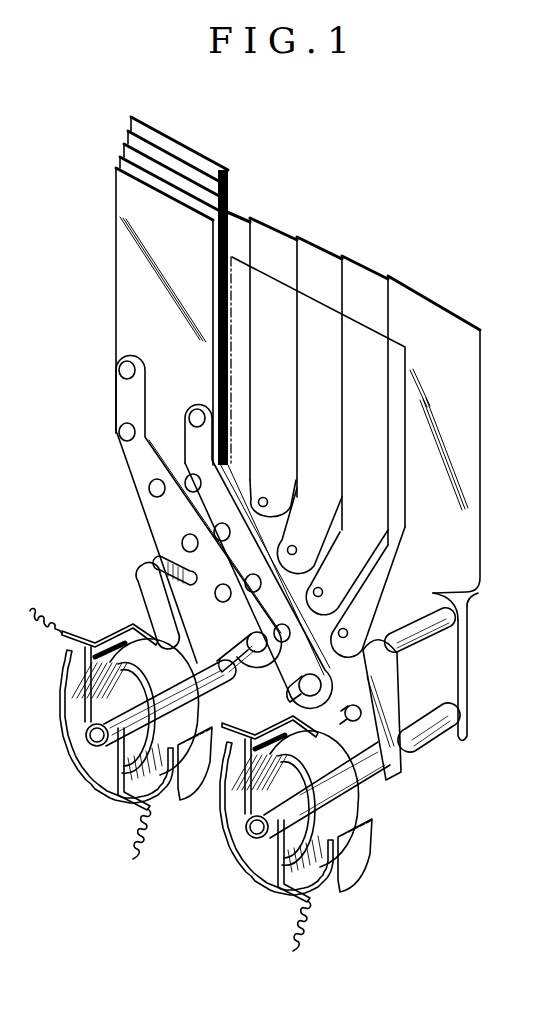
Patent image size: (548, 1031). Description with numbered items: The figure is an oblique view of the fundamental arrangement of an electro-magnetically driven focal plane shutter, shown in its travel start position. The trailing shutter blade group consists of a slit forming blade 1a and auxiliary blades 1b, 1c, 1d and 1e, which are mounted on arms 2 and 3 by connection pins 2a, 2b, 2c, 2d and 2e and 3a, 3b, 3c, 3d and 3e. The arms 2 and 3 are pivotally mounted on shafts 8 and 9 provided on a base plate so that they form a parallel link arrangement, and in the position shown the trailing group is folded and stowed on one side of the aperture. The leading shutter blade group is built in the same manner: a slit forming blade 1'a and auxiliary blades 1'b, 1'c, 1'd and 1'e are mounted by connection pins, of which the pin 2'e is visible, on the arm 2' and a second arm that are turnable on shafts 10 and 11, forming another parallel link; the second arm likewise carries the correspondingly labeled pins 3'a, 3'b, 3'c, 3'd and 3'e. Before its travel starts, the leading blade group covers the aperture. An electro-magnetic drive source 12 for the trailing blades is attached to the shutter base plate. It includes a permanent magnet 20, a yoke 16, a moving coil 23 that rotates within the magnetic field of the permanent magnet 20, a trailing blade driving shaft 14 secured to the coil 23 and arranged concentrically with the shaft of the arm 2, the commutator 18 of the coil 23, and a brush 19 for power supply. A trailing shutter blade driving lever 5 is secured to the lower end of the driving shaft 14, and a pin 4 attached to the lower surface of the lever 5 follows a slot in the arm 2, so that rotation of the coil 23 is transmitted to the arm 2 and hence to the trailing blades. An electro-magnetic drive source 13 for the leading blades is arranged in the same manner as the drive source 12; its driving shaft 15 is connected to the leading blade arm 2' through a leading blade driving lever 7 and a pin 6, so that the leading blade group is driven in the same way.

The slit forming blade 1a is at (116, 198).
The auxiliary blade 1b is at (120, 157).
The auxiliary blade 1c is at (124, 144).
The auxiliary blade 1d is at (128, 131).
The auxiliary blade 1e is at (157, 131).
The slit forming blade 1'a is at (316, 349).
The auxiliary blade 1'b is at (307, 377).
The auxiliary blade 1'c is at (347, 408).
The auxiliary blade 1'd is at (405, 438).
The auxiliary blade 1'e is at (450, 425).
The arm 2 is at (180, 512).
The connection pin 2a is at (118, 368).
The connection pin 2b is at (118, 432).
The connection pin 2c is at (148, 488).
The connection pin 2d is at (181, 543).
The connection pin 2e is at (213, 593).
The arm 3 is at (246, 552).
The connection pin 3a is at (193, 410).
The connection pin 3b is at (184, 479).
The connection pin 3c is at (213, 529).
The connection pin 3d is at (244, 581).
The connection pin 3e is at (246, 643).
The plate tongue 3'a is at (300, 570).
The plate tongue hole 3'b is at (270, 487).
The plate tongue hole 3'c is at (303, 530).
The plate tongue hole 3'd is at (332, 574).
The plate tongue hole 3'e is at (368, 619).
The arm 2' is at (480, 667).
The connection pin 2'e is at (430, 595).
The pin 4 is at (138, 572).
The trailing shutter blade driving lever 5 is at (156, 562).
The pin 6 is at (427, 642).
The leading blade driving lever 7 is at (388, 680).
The shaft 8 is at (260, 654).
The shaft 9 is at (300, 692).
The shaft 10 is at (426, 742).
The shaft 11 is at (349, 720).
The electro-magnetic drive source 12 is at (62, 748).
The electro-magnetic drive source 13 is at (222, 838).
The trailing blade driving shaft 14 is at (85, 680).
The driving shaft 15 is at (370, 774).
The yoke 16 is at (62, 733).
The commutator 18 is at (92, 746).
The brush 19 is at (63, 643).
The permanent magnet 20 is at (118, 780).
The moving coil 23 is at (165, 800).